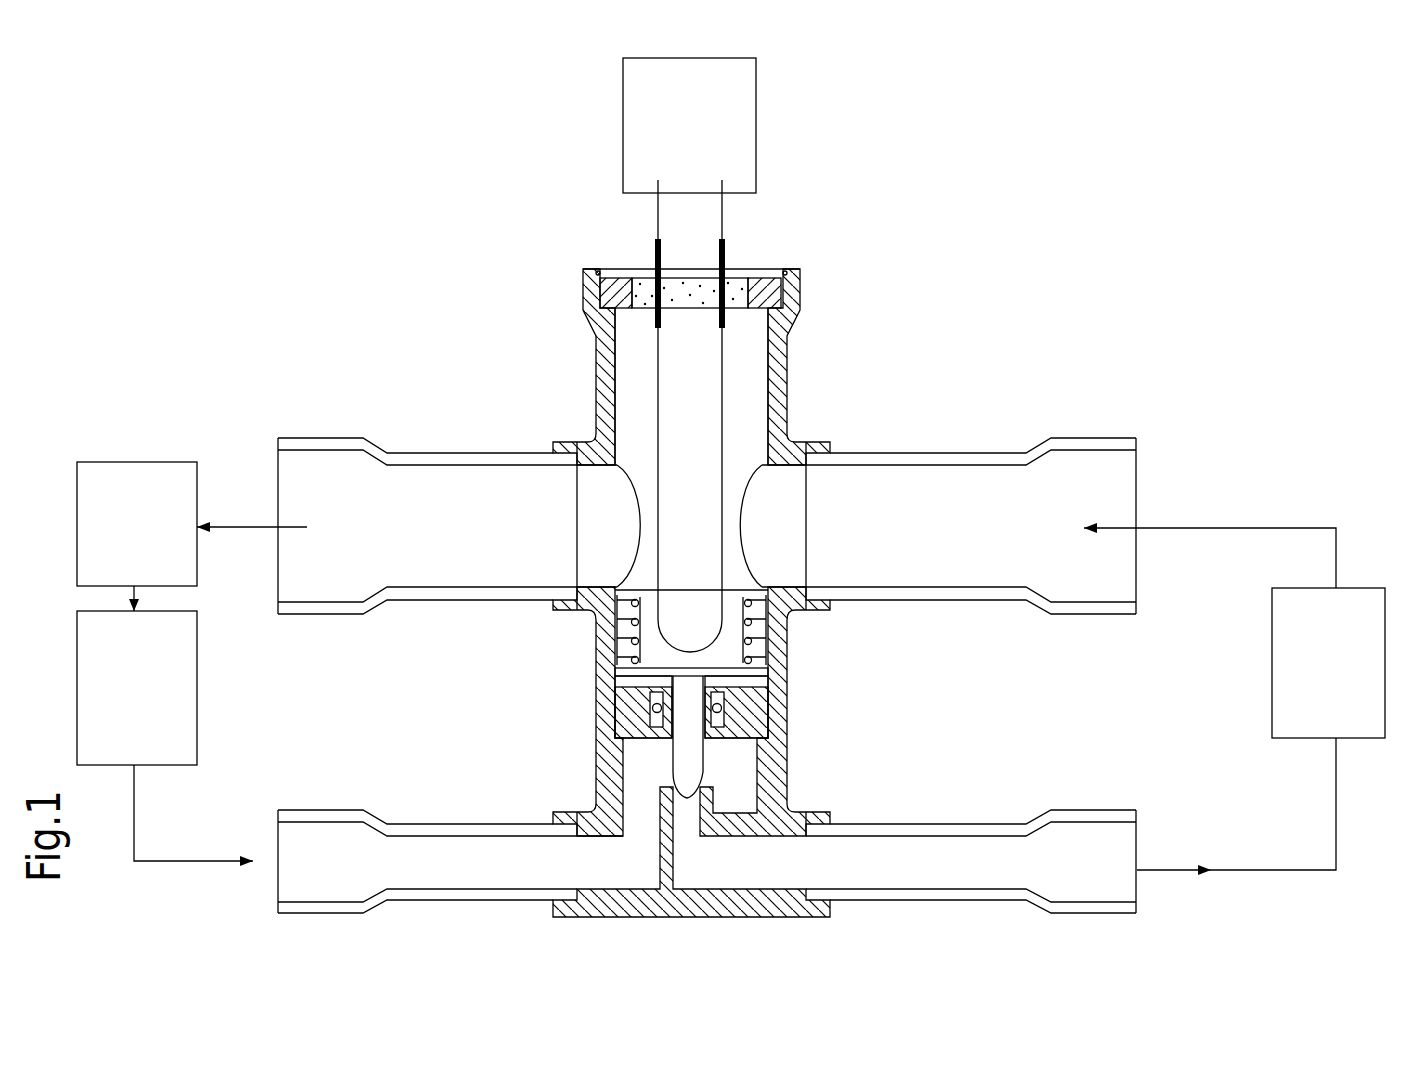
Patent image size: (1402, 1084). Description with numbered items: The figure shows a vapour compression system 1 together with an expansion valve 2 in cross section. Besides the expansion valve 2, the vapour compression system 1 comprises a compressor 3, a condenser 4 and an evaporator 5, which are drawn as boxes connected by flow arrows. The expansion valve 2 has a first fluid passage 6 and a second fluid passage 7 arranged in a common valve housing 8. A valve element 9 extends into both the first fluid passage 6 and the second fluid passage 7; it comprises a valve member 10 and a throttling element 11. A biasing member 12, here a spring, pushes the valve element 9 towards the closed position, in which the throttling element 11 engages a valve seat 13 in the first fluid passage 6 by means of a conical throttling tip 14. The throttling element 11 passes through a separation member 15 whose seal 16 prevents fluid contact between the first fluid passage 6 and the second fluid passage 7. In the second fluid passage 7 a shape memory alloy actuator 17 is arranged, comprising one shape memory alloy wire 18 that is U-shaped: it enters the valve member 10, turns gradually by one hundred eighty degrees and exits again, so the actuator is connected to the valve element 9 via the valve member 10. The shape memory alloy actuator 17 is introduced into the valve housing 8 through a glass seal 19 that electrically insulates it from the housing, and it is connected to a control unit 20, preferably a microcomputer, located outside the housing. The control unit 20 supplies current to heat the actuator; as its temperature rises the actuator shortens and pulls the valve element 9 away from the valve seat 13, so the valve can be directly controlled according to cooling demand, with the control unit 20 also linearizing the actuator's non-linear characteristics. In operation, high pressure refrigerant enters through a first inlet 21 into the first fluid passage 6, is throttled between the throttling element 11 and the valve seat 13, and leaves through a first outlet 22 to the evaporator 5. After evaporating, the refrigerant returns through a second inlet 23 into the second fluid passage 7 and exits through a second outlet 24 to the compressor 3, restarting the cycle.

The vapour compression system 1 is at (215, 183).
The expansion valve 2 is at (953, 283).
The compressor 3 is at (126, 531).
The condenser 4 is at (124, 700).
The evaporator 5 is at (1317, 672).
The first fluid passage 6 is at (640, 795).
The second fluid passage 7 is at (740, 438).
The valve housing 8 is at (603, 402).
The valve element 9 is at (700, 658).
The valve member 10 is at (645, 662).
The throttling element 11 is at (690, 760).
The biasing member 12 is at (757, 617).
The valve seat 13 is at (700, 787).
The conical throttling tip 14 is at (687, 792).
The separation member 15 is at (637, 712).
The seal 16 is at (720, 710).
The shape memory alloy actuator 17 is at (723, 383).
The shape memory alloy wire 18 is at (652, 375).
The glass seal 19 is at (732, 282).
The control unit 20 is at (723, 110).
The first inlet 21 is at (620, 870).
The first outlet 22 is at (757, 867).
The second inlet 23 is at (782, 500).
The second outlet 24 is at (598, 500).